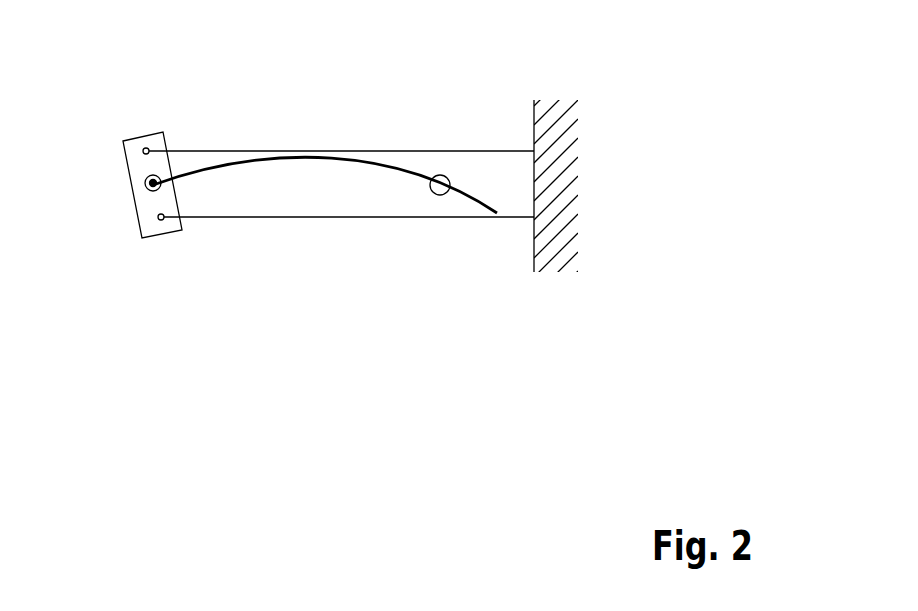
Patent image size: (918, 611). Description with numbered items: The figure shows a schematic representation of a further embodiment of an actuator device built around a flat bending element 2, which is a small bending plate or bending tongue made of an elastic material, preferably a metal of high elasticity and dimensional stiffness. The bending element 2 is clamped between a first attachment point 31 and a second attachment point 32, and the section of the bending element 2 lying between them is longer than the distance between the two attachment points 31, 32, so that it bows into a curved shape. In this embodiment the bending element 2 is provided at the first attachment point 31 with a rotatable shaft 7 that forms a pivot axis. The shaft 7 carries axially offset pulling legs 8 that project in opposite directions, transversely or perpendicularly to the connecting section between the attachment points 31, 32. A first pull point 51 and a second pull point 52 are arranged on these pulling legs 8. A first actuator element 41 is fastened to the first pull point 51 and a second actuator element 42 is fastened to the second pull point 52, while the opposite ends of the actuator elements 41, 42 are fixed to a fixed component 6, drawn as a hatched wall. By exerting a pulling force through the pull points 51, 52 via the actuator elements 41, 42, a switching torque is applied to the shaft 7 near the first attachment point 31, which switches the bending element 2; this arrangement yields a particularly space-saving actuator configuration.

The bending element 2 is at (355, 158).
The fixed component 6 is at (534, 185).
The rotatable shaft 7 is at (158, 185).
The pulling legs 8 is at (136, 146).
The first attachment point 31 is at (145, 183).
The second attachment point 32 is at (439, 196).
The first actuator element 41 is at (281, 150).
The second actuator element 42 is at (275, 219).
The first pull point 51 is at (146, 148).
The second pull point 52 is at (161, 220).